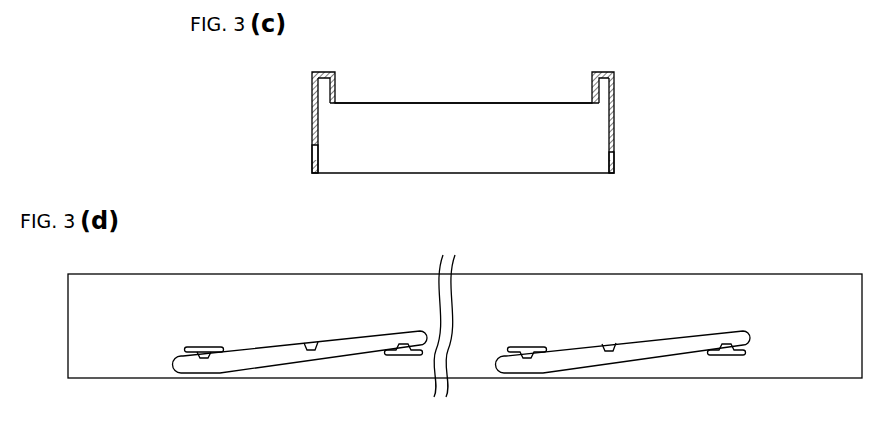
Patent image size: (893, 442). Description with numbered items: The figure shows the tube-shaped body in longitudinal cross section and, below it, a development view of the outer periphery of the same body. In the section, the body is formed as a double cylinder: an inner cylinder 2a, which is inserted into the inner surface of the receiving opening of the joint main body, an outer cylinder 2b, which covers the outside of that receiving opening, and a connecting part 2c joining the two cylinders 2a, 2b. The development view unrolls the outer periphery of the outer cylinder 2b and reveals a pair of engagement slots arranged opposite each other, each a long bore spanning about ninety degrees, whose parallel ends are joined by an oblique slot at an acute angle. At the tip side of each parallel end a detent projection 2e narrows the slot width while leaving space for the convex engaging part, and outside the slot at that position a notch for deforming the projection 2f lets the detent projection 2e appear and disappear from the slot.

The inner cylinder 2a is at (592, 93).
The outer cylinder 2b is at (614, 108).
The connecting part 2c is at (607, 71).
The detent projection 2e is at (203, 360).
The notch for deforming the projection 2f is at (203, 347).